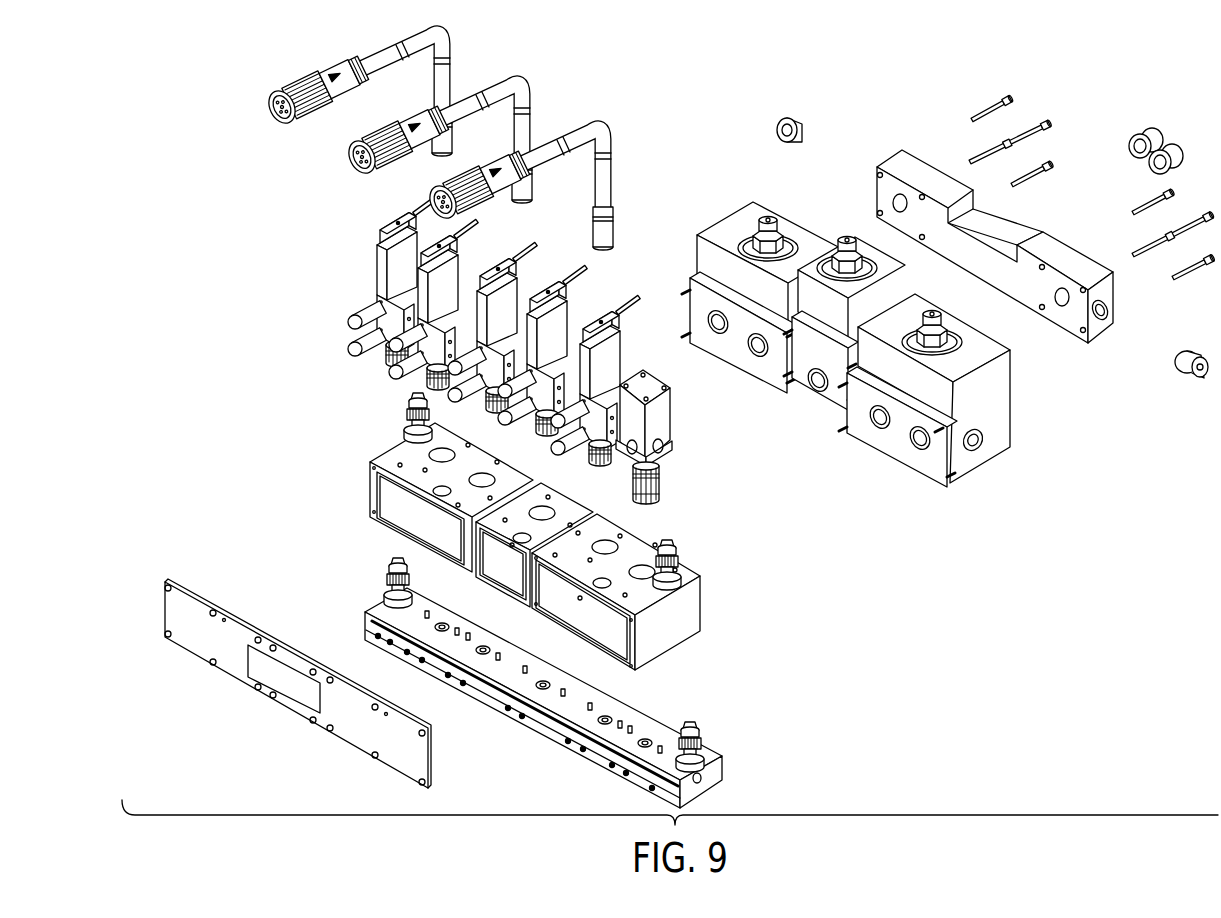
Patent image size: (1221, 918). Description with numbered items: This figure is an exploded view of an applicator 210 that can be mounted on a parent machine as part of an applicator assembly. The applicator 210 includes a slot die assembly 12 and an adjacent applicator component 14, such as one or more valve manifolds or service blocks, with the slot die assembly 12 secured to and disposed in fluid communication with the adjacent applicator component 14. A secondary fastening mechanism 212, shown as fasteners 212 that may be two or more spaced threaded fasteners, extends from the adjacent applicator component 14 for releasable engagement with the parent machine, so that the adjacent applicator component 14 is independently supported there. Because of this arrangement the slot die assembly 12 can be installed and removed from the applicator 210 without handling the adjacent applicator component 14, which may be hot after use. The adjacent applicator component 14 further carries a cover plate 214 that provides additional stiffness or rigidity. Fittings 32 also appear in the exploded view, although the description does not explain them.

The slot die assembly 12 is at (696, 782).
The adjacent applicator component 14 is at (685, 618).
The fitting 32 is at (383, 572).
The applicator 210 is at (298, 378).
The secondary fastening mechanism 212 is at (406, 414).
The cover plate 214 is at (170, 605).